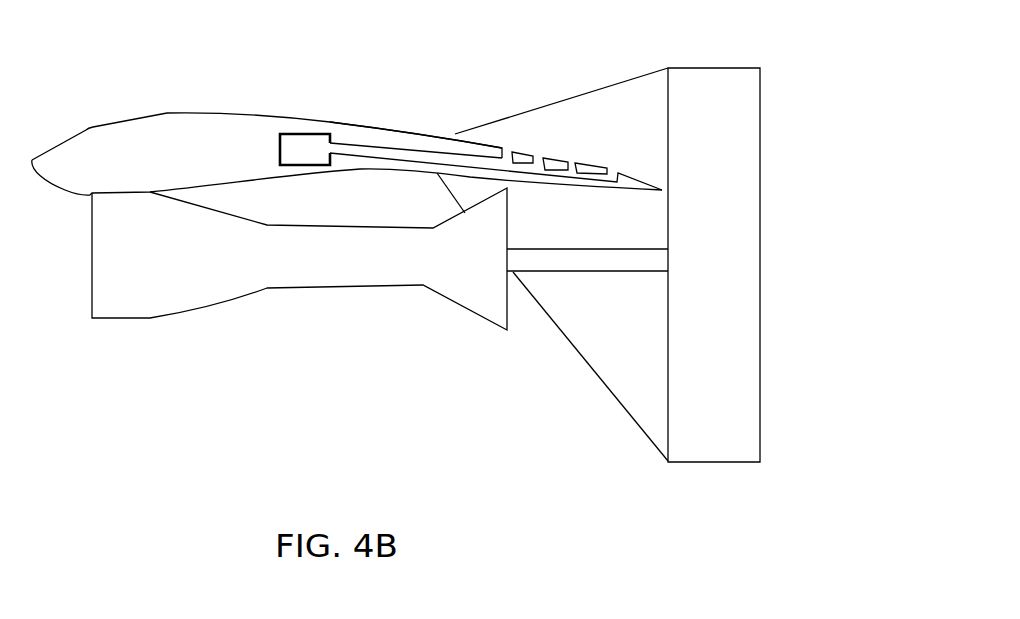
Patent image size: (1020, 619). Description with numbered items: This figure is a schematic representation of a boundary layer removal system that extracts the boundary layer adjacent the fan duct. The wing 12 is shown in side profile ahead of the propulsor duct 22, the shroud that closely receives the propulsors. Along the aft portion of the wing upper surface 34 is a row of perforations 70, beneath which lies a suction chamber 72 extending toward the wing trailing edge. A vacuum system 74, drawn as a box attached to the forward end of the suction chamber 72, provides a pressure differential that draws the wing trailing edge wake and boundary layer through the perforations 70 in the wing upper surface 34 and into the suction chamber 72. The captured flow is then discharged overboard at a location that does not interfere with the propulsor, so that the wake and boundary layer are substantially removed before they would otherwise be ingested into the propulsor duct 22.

The wing 12 is at (143, 115).
The propulsor duct 22 is at (752, 223).
The wing upper surface 34 is at (455, 134).
The perforations 70 is at (512, 150).
The suction chamber 72 is at (400, 155).
The vacuum system 74 is at (303, 147).